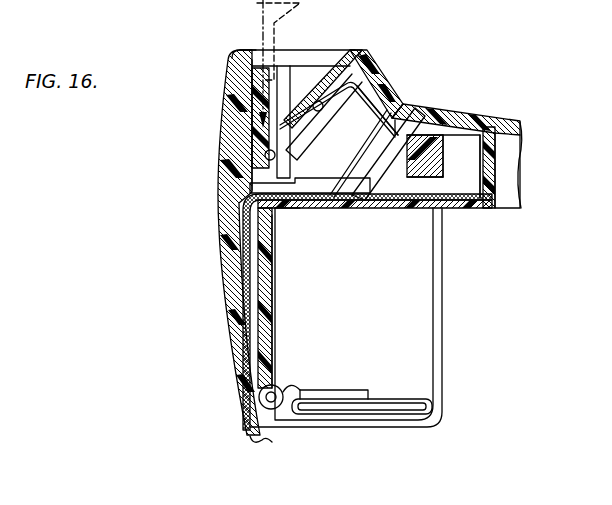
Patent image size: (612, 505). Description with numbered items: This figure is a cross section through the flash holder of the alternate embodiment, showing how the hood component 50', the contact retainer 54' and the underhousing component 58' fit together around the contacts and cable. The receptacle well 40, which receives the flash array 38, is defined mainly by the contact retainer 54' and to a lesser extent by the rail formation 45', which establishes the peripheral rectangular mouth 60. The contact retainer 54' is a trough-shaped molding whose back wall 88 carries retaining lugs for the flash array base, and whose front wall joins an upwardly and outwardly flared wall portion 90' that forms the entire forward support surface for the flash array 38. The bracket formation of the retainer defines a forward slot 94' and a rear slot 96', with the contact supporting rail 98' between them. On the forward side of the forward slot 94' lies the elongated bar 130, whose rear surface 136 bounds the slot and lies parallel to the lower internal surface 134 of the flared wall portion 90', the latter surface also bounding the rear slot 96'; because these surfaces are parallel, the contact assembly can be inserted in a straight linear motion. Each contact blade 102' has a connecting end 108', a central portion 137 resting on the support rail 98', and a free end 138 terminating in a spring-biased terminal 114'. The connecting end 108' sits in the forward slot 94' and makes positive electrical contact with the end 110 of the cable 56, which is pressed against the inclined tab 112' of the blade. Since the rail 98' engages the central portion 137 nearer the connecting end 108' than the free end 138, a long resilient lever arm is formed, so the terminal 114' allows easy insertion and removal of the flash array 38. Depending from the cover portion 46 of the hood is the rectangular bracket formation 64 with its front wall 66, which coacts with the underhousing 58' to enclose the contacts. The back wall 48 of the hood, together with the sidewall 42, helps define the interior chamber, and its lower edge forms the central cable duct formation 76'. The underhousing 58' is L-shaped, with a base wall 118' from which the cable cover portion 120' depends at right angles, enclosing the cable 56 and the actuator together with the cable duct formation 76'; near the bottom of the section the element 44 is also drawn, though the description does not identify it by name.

The flash array 38 is at (262, 15).
The receptacle well 40 is at (294, 67).
The sidewall 42 is at (418, 364).
The roller / bar 44 is at (296, 396).
The rail formation 45' is at (361, 86).
The cover portion 46 is at (510, 118).
The back wall 48 is at (243, 196).
The hood component 50' is at (456, 104).
The contact retainer 54' is at (214, 123).
The cable 56 is at (260, 296).
The underhousing component 58' is at (375, 236).
The peripheral rectangular mouth 60 is at (256, 48).
The rectangular bracket formation 64 is at (498, 178).
The front wall 66 is at (490, 145).
The central cable duct formation 76' is at (214, 242).
The back wall 88 is at (251, 133).
The outwardly flared wall portion 90' is at (366, 69).
The forward slot 94' is at (443, 187).
The rear slot 96' is at (360, 172).
The contact supporting rail 98' is at (394, 101).
The contact blade 102' is at (327, 117).
The connecting end 108' is at (374, 222).
The end of the cable 110 is at (408, 122).
The inclined tab 112' is at (391, 170).
The spring-biased terminal 114' is at (224, 154).
The base wall 118' is at (287, 236).
The cable cover portion 120' is at (302, 301).
The elongated bar 130 is at (438, 168).
The lower internal surface 134 is at (380, 55).
The rear surface 136 is at (441, 150).
The central portion 137 is at (460, 104).
The free end 138 is at (317, 102).